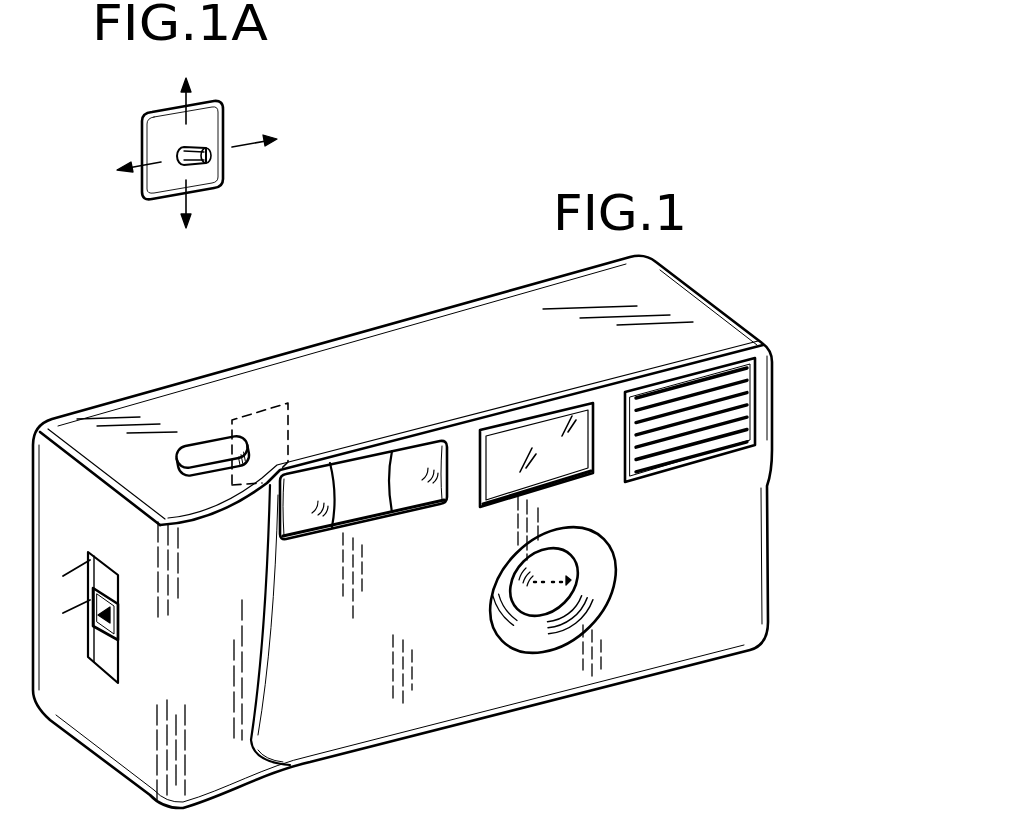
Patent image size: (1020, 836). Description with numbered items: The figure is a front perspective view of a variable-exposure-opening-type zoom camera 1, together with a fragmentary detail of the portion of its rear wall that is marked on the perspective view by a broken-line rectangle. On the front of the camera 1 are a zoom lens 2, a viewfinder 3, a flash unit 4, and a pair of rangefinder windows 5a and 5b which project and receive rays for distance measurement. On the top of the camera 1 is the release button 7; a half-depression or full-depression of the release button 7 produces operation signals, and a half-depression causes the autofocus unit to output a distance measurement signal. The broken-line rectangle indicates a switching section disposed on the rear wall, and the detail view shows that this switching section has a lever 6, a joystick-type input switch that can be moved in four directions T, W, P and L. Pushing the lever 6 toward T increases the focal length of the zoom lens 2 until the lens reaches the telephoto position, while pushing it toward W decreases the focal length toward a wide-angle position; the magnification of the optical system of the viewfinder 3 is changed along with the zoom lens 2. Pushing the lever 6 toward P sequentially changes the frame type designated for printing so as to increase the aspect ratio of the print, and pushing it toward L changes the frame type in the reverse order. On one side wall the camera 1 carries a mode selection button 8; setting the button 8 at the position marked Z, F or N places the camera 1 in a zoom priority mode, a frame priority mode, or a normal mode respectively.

In FIG. 1, the camera 1 is at (450, 333).
In FIG. 1, the zoom lens 2 is at (530, 610).
In FIG. 1, the viewfinder 3 is at (507, 437).
In FIG. 1, the flash unit 4 is at (691, 440).
In FIG. 1, the rangefinder window 5a is at (300, 527).
In FIG. 1, the rangefinder window 5b is at (413, 497).
In FIG. 1A, the lever 6 is at (203, 167).
In FIG. 1, the release button 7 is at (204, 450).
In FIG. 1, the mode selection button 8 is at (117, 624).